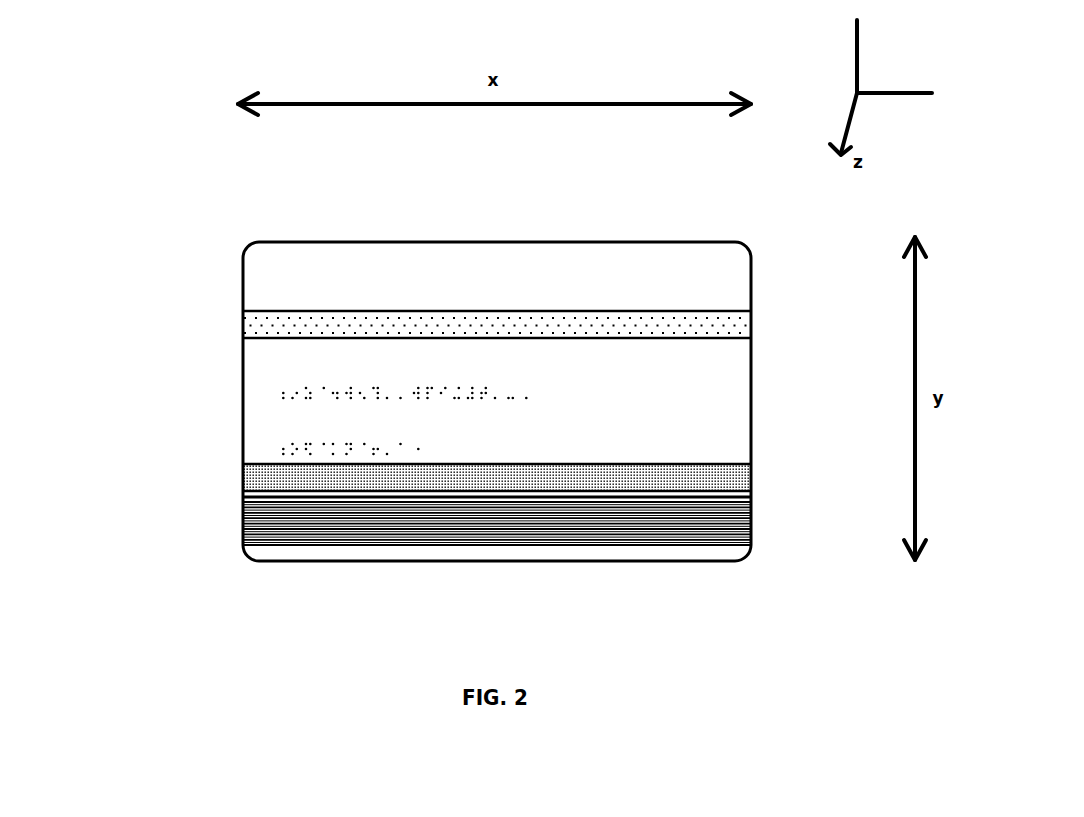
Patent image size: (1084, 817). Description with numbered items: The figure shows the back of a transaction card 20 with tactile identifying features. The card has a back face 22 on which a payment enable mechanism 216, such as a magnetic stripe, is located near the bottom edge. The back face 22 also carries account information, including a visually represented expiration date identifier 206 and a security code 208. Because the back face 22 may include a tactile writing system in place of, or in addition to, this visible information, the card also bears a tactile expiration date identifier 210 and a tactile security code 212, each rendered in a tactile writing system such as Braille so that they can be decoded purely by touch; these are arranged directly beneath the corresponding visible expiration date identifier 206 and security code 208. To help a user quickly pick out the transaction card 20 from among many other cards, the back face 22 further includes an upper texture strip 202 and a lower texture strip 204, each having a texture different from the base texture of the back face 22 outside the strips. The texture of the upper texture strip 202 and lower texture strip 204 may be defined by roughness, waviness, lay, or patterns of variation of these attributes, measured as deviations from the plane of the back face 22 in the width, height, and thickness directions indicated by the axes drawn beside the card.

The transaction card 20 is at (335, 220).
The back face 22 is at (266, 272).
The upper texture strip 202 is at (243, 325).
The lower texture strip 204 is at (243, 478).
The expiration date identifier 206 is at (270, 364).
The security code 208 is at (270, 425).
The tactile expiration date identifier 210 is at (270, 390).
The tactile security code 212 is at (270, 452).
The payment enable mechanism 216 is at (752, 521).